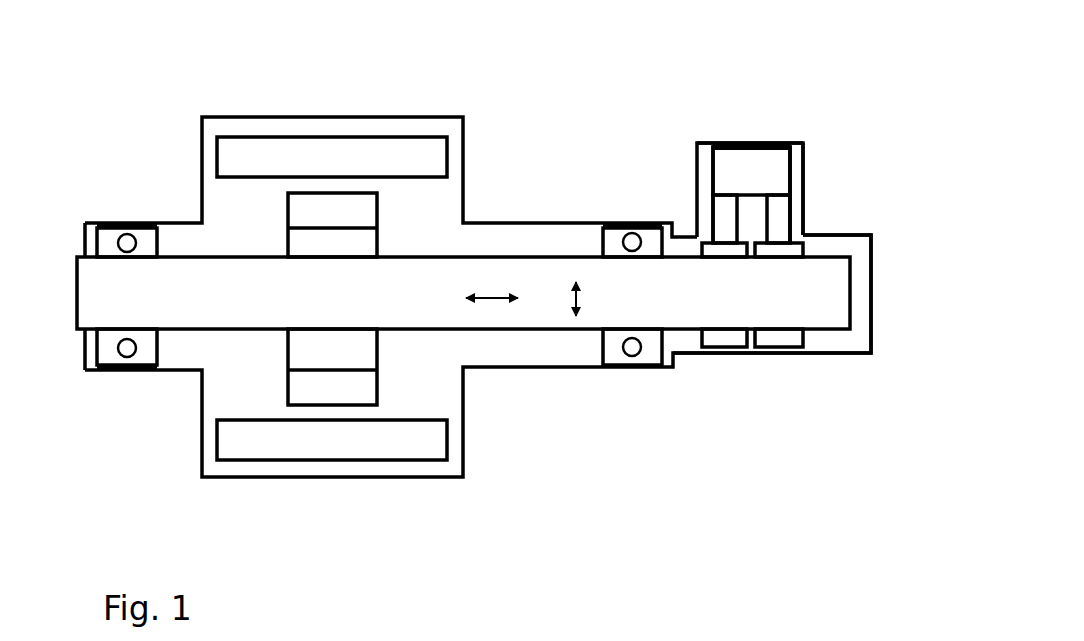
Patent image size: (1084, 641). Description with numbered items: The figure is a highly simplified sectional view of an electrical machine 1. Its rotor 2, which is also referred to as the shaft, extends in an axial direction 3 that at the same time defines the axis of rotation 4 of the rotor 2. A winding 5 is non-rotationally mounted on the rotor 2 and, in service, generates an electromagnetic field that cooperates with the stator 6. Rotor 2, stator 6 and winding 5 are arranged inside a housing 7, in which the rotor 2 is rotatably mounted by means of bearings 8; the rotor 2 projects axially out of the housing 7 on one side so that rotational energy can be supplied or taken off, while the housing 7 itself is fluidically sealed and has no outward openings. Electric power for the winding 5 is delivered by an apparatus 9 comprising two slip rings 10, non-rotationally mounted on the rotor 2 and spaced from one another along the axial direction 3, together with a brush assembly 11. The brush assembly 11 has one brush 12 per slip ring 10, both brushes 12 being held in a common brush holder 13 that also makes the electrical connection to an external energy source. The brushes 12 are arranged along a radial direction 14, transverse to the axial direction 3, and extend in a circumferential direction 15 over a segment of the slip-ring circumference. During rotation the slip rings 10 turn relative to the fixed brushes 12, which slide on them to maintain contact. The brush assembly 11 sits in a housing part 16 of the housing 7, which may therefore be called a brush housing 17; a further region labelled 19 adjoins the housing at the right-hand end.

The electrical machine 1 is at (105, 67).
The rotor 2 is at (438, 334).
The axial direction 3 is at (504, 314).
The axis of rotation 4 is at (490, 299).
The winding 5 is at (287, 397).
The stator 6 is at (233, 448).
The housing 7 is at (478, 336).
The bearings 8 is at (105, 362).
The apparatus 9 is at (693, 170).
The slip ring 10 is at (715, 337).
The brush assembly 11 is at (800, 163).
The brush 12 is at (717, 213).
The brush holder 13 is at (742, 158).
The radial direction 14 is at (582, 297).
The circumferential direction 15 is at (575, 197).
The housing part 16 is at (719, 93).
The brush housing 17 is at (712, 140).
The flange 19 is at (807, 248).